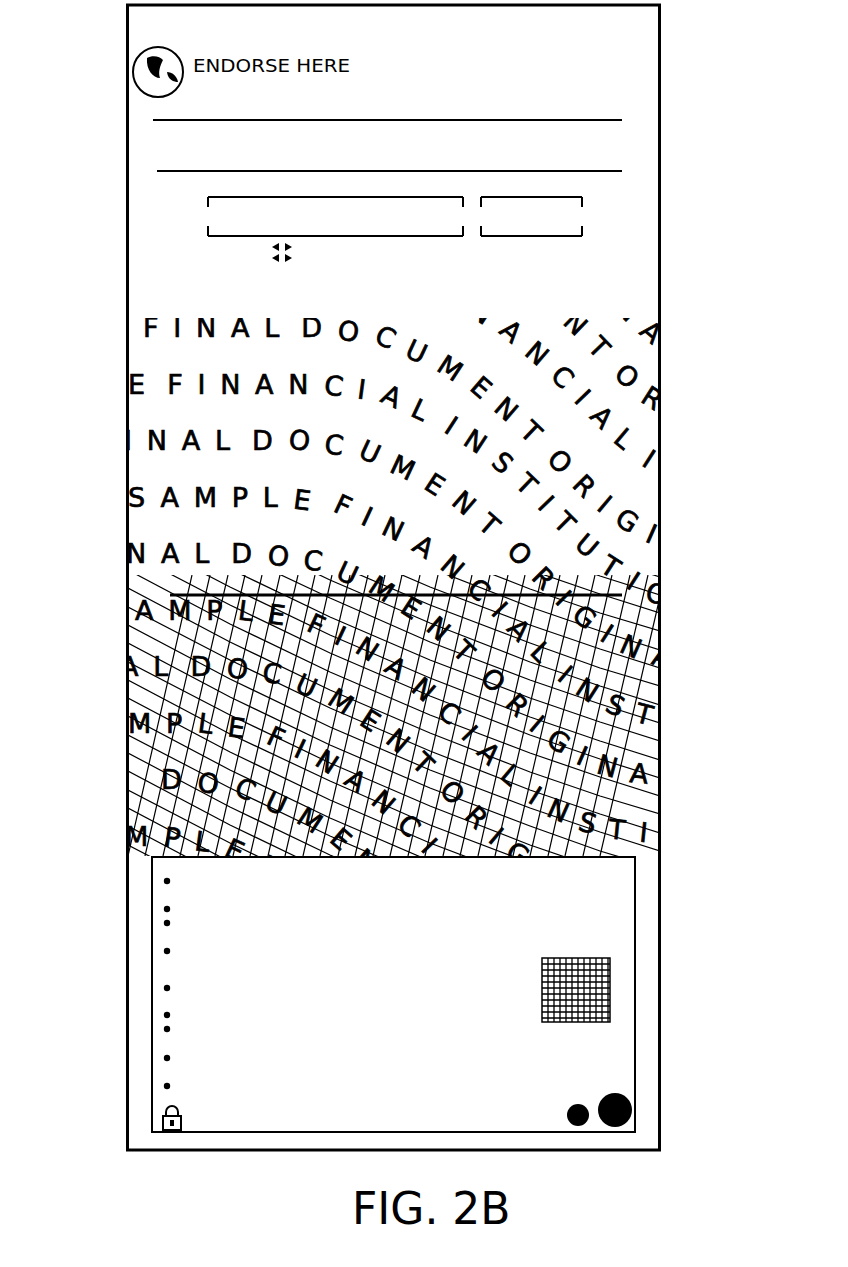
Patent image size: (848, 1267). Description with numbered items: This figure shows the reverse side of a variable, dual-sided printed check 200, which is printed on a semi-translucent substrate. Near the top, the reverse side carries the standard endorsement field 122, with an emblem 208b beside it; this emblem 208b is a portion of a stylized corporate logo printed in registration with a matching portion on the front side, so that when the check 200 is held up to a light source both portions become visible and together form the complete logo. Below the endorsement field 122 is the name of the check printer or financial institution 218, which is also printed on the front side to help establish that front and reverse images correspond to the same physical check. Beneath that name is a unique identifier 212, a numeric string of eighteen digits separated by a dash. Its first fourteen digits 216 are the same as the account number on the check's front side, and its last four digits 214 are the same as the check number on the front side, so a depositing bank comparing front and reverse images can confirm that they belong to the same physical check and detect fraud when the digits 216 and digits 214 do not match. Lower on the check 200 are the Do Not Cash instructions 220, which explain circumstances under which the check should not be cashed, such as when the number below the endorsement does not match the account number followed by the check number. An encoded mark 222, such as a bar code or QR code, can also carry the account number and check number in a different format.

The check 200 is at (722, 645).
The emblem 208b is at (178, 52).
The endorsement field 122 is at (626, 80).
The name of the check printer or financial institution 218 is at (270, 183).
The unique identifier 212 is at (437, 196).
The digits 214 is at (525, 237).
The digits 216 is at (340, 237).
The Do Not Cash instructions 220 is at (648, 232).
The encoded mark 222 is at (611, 988).